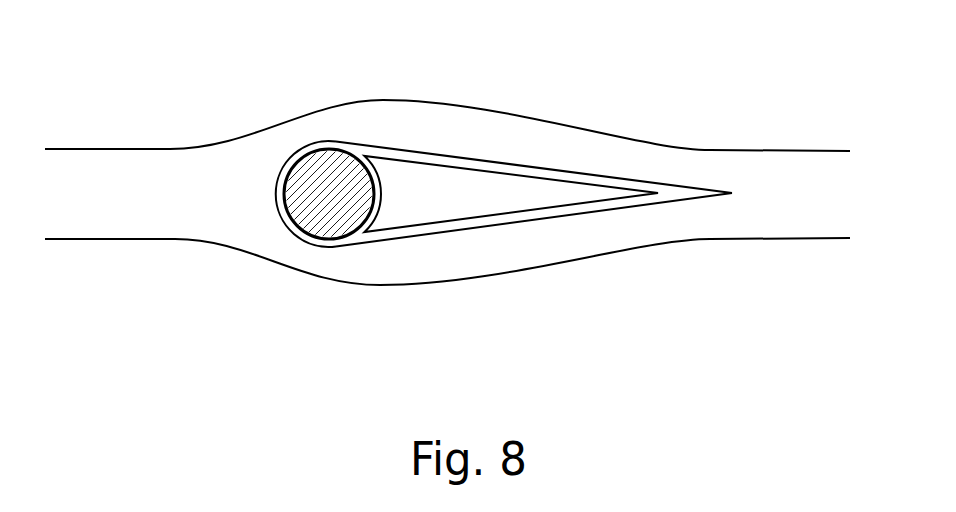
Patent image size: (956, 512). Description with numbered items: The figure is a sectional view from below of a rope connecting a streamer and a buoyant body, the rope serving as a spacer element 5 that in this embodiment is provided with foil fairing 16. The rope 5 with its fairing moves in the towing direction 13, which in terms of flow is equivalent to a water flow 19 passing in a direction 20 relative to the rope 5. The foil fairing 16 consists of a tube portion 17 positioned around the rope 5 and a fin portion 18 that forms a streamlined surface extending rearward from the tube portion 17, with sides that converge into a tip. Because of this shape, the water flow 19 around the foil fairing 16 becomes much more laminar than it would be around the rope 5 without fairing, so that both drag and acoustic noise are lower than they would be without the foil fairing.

The spacer element 5 is at (323, 198).
The towing direction 13 is at (232, 195).
The foil fairing 16 is at (537, 228).
The tube portion 17 is at (290, 160).
The fin portion 18 is at (595, 174).
The water flow 19 is at (402, 288).
The direction of water flow 20 is at (552, 62).